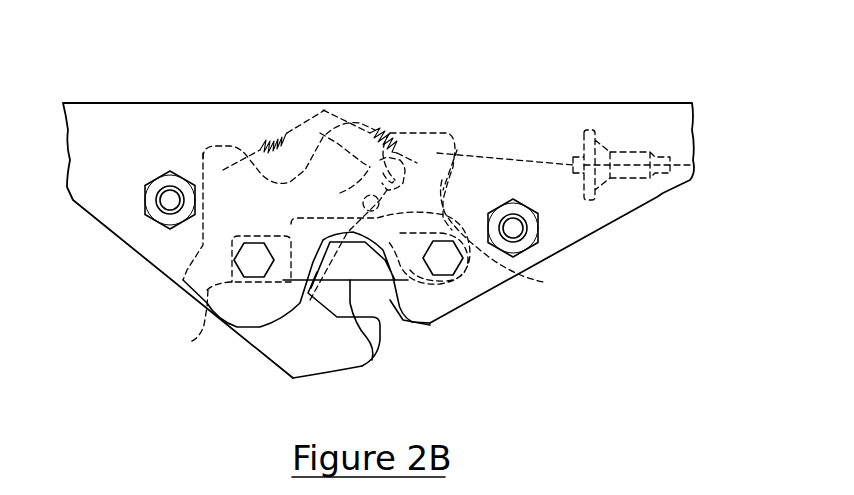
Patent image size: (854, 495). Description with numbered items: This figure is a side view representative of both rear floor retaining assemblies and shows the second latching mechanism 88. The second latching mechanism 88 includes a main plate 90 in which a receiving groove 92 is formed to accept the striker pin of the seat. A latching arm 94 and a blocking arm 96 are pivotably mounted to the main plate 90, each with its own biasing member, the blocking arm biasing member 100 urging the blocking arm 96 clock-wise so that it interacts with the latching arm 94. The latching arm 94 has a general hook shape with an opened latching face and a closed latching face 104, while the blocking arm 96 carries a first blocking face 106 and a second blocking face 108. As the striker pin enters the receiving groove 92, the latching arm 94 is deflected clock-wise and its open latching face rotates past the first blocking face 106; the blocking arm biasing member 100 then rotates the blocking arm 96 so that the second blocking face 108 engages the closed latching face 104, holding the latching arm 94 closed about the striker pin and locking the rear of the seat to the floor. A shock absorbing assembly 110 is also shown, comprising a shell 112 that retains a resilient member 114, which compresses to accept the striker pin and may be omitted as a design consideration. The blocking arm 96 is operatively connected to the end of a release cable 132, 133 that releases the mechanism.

The second latching mechanism 88 is at (170, 280).
The main plate 90 is at (612, 230).
The receiving groove 92 is at (395, 300).
The latching arm 94 is at (257, 356).
The blocking arm 96 is at (418, 133).
The blocking arm biasing member 100 is at (385, 130).
The closed latching face 104 is at (340, 193).
The first blocking face 106 is at (543, 282).
The second blocking face 108 is at (263, 130).
The shock absorbing assembly 110 is at (218, 258).
The shell 112 is at (190, 342).
The resilient member 114 is at (365, 368).
The release cable 132 is at (510, 158).
The bolt axis 133 is at (510, 158).